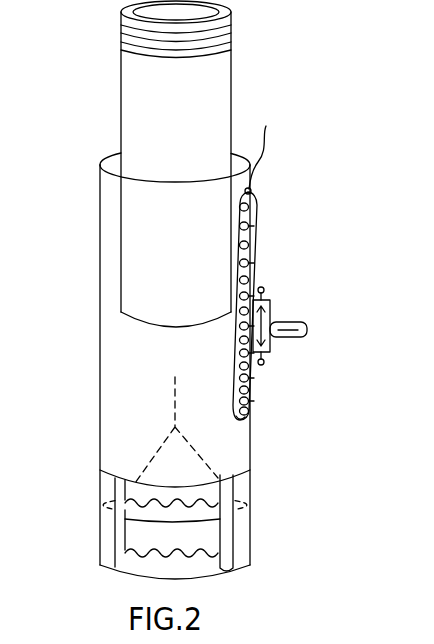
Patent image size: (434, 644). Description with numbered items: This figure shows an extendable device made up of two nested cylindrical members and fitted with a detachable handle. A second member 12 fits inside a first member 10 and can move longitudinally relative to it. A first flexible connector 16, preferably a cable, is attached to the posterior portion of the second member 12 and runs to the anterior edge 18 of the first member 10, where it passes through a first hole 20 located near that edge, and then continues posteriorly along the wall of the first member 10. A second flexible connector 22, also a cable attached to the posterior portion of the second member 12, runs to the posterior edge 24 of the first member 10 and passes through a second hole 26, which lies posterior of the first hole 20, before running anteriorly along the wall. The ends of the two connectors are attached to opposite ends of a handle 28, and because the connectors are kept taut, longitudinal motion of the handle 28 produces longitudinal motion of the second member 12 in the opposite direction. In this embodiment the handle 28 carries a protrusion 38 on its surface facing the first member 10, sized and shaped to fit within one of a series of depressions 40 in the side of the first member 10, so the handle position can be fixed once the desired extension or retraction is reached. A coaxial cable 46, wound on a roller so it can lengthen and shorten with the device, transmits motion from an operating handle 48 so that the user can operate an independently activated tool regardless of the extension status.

The first member 10 is at (110, 398).
The second member 12 is at (135, 83).
The first flexible connector 16 is at (258, 240).
The anterior edge 18 is at (268, 143).
The first hole 20 is at (259, 191).
The second flexible connector 22 is at (256, 394).
The posterior edge 24 is at (250, 478).
The second hole 26 is at (250, 419).
The handle 28 is at (303, 320).
The protrusion 38 is at (237, 333).
The depressions 40 is at (262, 270).
The coaxial cable 46 is at (172, 412).
The operating handle 48 is at (203, 567).